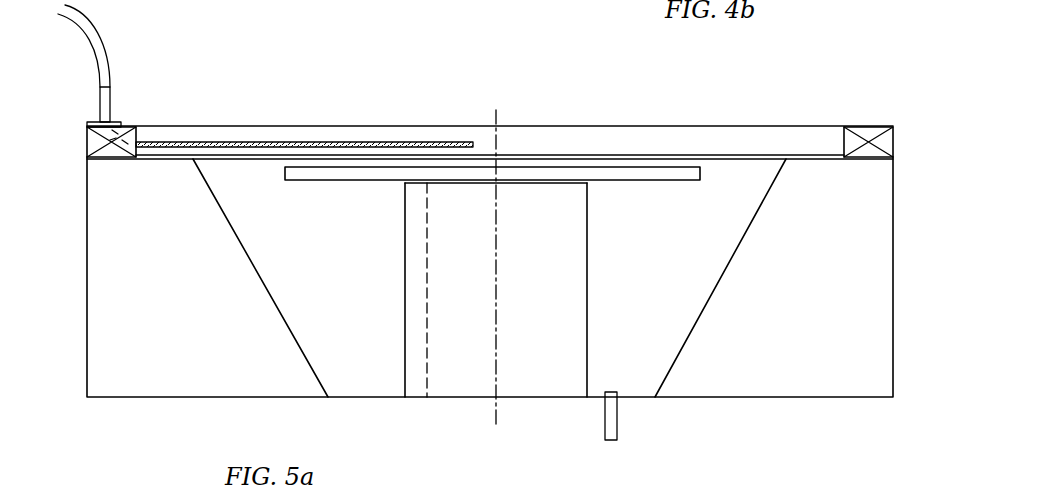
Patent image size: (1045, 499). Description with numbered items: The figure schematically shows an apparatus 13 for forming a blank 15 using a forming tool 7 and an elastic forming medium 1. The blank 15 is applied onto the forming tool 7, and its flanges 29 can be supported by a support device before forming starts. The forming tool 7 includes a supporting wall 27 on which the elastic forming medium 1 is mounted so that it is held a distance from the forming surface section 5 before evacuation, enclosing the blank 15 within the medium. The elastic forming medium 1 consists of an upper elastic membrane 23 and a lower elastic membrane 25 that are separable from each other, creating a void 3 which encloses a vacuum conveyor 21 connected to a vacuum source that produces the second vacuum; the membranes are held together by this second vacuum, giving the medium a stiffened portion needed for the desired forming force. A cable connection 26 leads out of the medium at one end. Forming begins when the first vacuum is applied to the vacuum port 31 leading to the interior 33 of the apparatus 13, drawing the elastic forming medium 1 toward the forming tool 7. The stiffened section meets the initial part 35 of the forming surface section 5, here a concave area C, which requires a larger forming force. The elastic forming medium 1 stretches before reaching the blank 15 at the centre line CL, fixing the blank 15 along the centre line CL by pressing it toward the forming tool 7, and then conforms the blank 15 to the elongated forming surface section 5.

The elastic forming medium 1 is at (577, 113).
The void 3 is at (720, 141).
The forming surface section 5 is at (399, 235).
The forming tool 7 is at (575, 307).
The apparatus 13 is at (741, 416).
The blank 15 is at (539, 173).
The vacuum conveyor 21 is at (395, 140).
The upper elastic membrane 23 is at (457, 127).
The lower elastic membrane 25 is at (662, 155).
The cable connector 26 is at (58, 111).
The supporting wall 27 is at (700, 318).
The flanges 29 is at (320, 181).
The vacuum port 31 is at (617, 425).
The interior 33 is at (355, 319).
The initial part 35 is at (386, 198).
The concave area C is at (383, 325).
The centre line CL is at (496, 110).